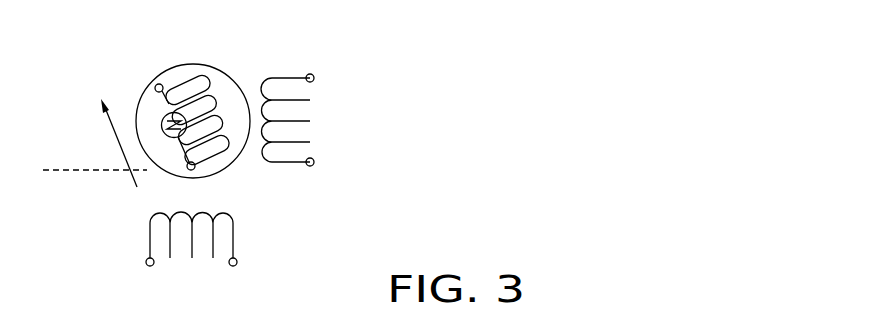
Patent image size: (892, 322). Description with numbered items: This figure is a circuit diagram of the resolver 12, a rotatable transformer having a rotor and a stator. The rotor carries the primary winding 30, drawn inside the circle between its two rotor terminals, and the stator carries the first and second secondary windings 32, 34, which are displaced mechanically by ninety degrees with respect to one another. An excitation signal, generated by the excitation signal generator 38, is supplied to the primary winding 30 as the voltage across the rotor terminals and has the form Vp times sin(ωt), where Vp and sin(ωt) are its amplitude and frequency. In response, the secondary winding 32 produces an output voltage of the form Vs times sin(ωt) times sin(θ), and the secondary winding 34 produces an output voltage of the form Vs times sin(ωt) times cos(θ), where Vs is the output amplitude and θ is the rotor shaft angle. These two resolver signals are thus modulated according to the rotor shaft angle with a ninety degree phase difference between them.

The resolver 12 is at (361, 45).
The primary winding 30 is at (211, 82).
The first secondary winding 32 is at (217, 215).
The second secondary winding 34 is at (263, 83).
The excitation signal generator 38 is at (162, 128).